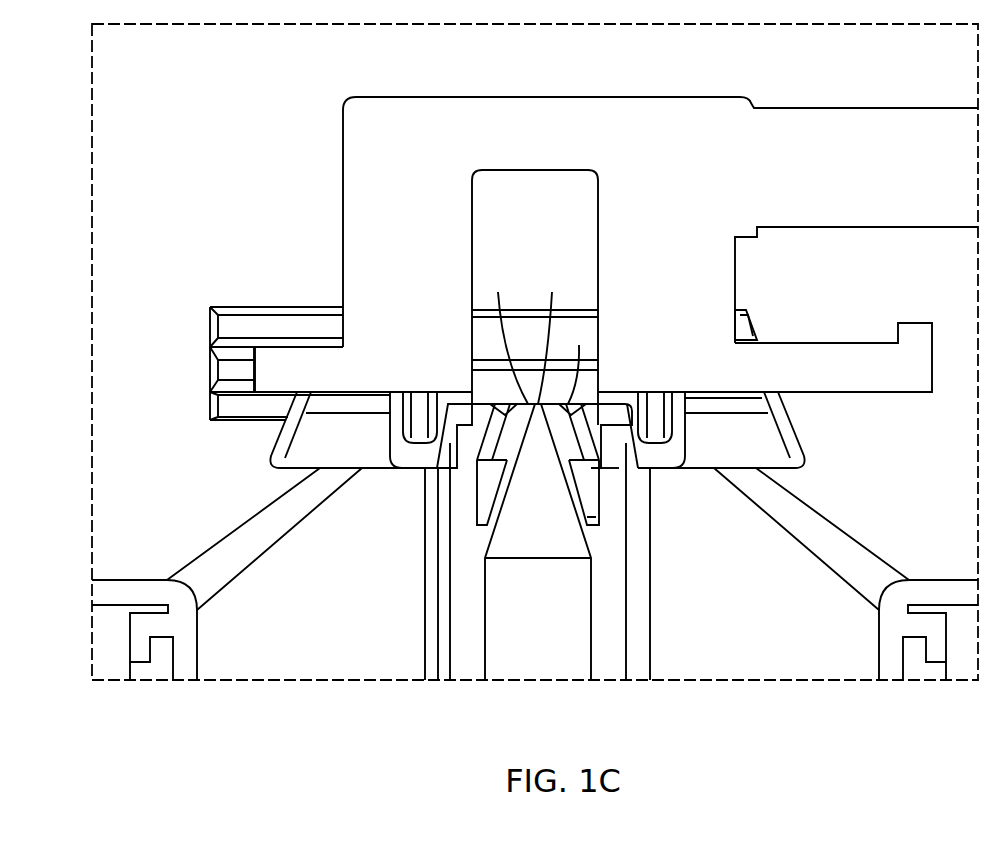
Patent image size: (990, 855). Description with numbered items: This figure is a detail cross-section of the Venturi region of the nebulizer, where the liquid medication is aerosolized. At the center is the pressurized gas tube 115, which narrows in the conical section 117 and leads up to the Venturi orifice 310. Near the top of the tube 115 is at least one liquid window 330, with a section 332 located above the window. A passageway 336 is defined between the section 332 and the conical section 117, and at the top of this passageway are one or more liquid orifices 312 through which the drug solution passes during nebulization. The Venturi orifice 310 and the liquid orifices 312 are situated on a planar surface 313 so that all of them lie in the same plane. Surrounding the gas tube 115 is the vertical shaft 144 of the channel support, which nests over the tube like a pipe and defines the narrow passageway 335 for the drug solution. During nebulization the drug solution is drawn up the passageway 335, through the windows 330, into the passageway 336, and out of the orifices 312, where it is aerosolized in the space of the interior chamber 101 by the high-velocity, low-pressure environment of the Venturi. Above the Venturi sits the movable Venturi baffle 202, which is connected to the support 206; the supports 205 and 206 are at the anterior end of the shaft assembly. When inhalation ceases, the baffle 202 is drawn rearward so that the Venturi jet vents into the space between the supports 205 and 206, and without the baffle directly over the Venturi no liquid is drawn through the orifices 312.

The interior chamber 101 is at (833, 302).
The pressurized gas tube 115 is at (575, 598).
The conical section 117 is at (562, 520).
The vertical shaft 144 is at (439, 628).
The Venturi baffle 202 is at (862, 393).
The support 205 is at (405, 165).
The support 206 is at (680, 165).
The Venturi orifice 310 is at (551, 336).
The liquid orifices 312 is at (504, 336).
The planar surface 313 is at (579, 363).
The liquid window 330 is at (590, 535).
The section 332 is at (488, 490).
The passageway 335 is at (460, 667).
The passageway 336 is at (505, 478).